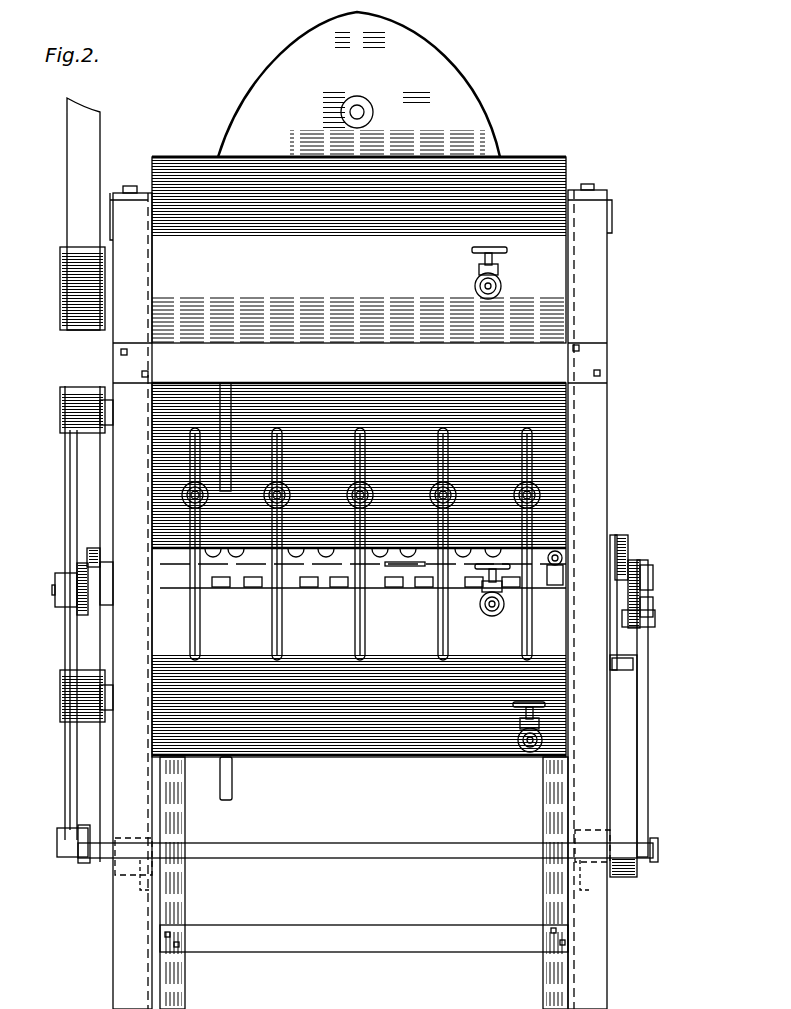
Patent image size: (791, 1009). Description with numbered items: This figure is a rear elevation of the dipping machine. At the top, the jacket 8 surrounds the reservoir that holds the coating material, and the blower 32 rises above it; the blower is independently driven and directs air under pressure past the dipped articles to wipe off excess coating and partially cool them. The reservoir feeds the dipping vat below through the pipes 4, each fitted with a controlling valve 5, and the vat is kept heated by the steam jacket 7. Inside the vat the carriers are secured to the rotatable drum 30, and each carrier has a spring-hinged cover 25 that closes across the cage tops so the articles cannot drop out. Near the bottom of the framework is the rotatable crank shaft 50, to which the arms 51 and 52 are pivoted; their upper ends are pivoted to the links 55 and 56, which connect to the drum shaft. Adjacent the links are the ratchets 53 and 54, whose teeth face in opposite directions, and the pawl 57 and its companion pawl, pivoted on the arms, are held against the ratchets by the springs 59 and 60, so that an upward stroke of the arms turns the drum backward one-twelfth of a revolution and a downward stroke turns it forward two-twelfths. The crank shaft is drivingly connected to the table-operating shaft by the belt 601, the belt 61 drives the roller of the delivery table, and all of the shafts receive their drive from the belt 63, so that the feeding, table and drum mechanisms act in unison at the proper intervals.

The pipes 4 is at (270, 609).
The controlling valves 5 is at (352, 486).
The steam jacket 7 is at (453, 740).
The jacket 8 is at (567, 172).
The cover 25 is at (330, 589).
The rotatable drum 30 is at (397, 567).
The fan or blower 32 is at (433, 63).
The crank shaft 50 is at (338, 846).
The arm 51 is at (647, 700).
The arm 52 is at (68, 768).
The ratchet 53 is at (640, 563).
The ratchet 54 is at (80, 612).
The link 55 is at (654, 578).
The link 56 is at (55, 589).
The pawl 57 is at (650, 605).
The spring 59 is at (624, 540).
The spring 60 is at (87, 553).
The belt 601 is at (628, 742).
The belt 61 is at (68, 483).
The belt 63 is at (68, 146).